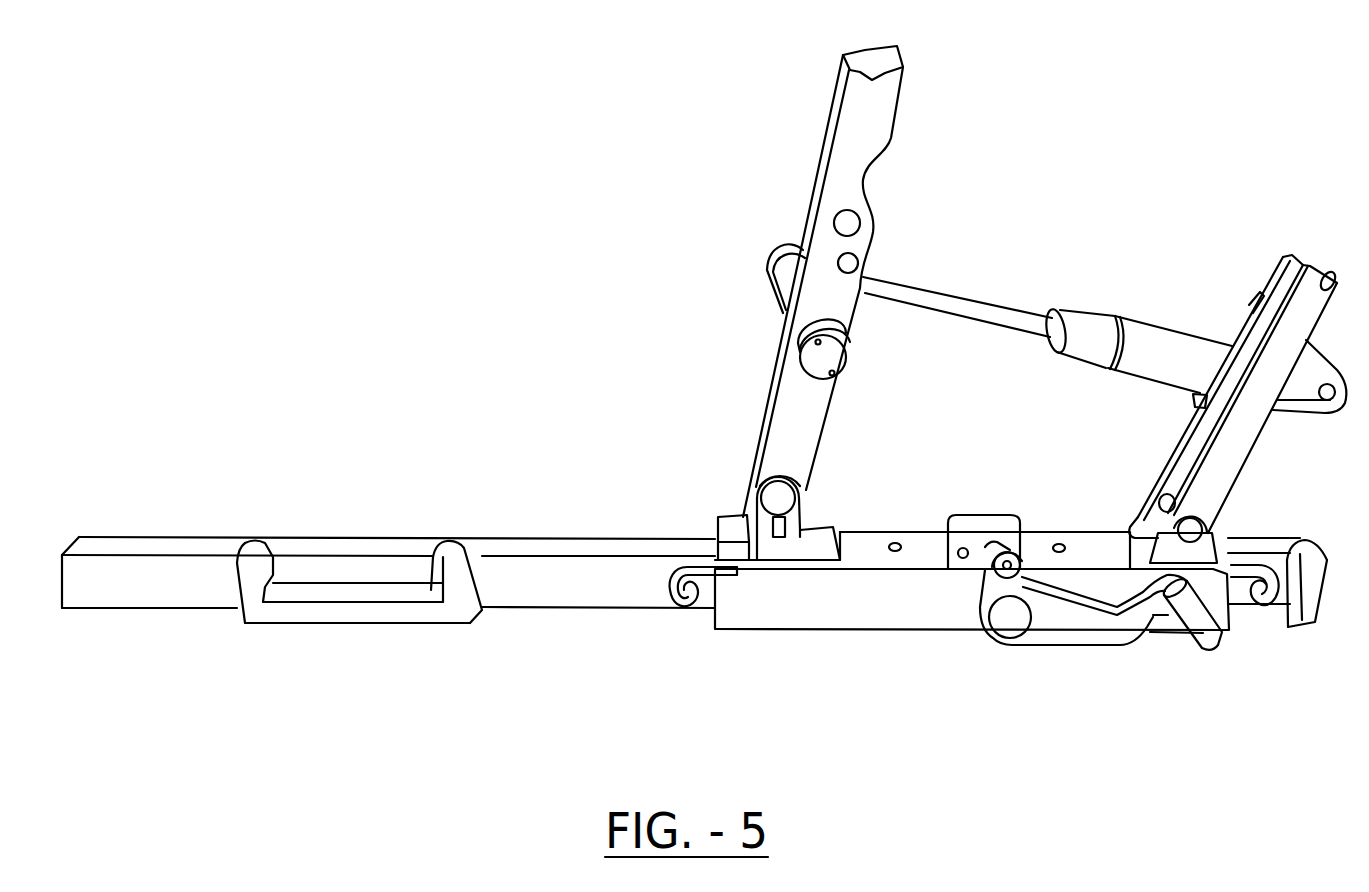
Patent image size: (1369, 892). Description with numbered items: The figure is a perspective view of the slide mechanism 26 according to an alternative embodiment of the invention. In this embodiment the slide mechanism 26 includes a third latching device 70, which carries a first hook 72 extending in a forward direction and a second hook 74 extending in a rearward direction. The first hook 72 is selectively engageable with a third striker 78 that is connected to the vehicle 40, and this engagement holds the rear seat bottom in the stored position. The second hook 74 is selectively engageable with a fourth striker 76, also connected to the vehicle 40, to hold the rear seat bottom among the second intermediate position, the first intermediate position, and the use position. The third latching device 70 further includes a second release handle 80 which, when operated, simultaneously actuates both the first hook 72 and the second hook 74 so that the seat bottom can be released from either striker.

The slide mechanism 26 is at (813, 675).
The vehicle 40 is at (247, 750).
The third latching device 70 is at (922, 605).
The first hook 72 is at (672, 595).
The second hook 74 is at (1243, 608).
The fourth striker 76 is at (1300, 617).
The third striker 78 is at (443, 578).
The second release handle 80 is at (1202, 633).